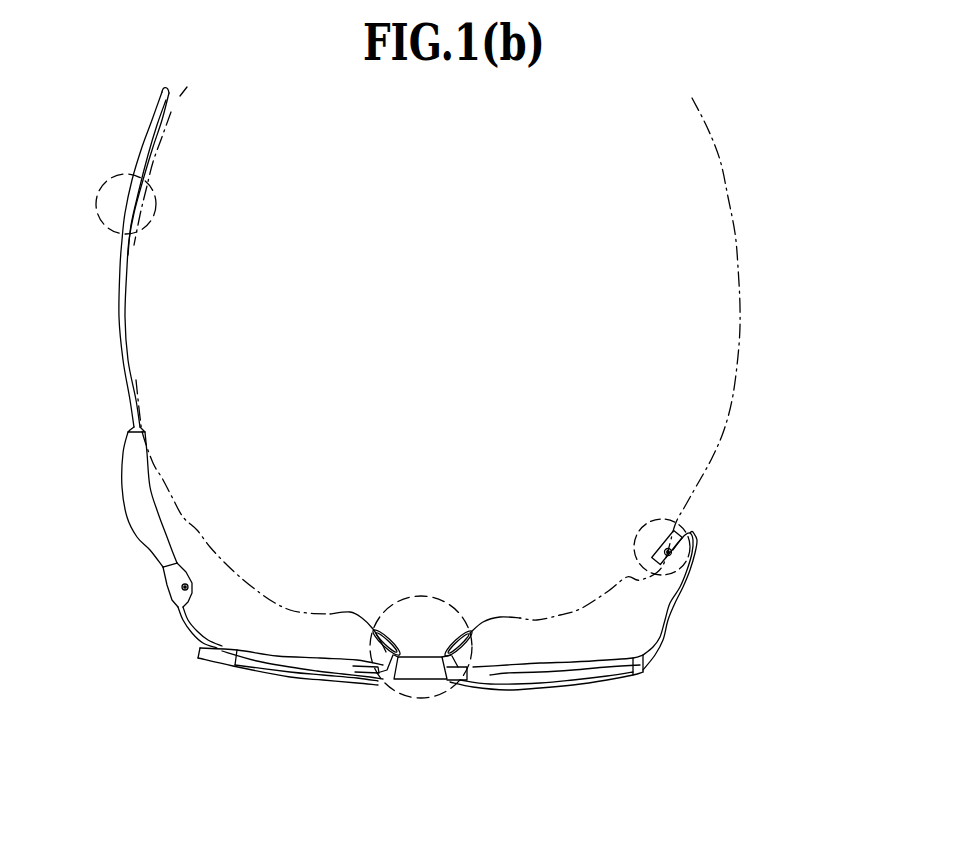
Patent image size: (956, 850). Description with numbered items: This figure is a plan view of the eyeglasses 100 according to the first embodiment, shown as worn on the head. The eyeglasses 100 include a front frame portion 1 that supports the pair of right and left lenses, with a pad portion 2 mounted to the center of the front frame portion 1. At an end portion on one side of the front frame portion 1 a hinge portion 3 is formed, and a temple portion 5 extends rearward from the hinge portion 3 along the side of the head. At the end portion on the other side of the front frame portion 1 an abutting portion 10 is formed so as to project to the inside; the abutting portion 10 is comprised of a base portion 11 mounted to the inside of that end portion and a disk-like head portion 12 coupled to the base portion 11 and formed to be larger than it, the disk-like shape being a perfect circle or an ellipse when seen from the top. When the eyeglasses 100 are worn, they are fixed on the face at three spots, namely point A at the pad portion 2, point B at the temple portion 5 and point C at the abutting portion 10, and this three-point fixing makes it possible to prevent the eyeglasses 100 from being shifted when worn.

The eyeglasses 100 is at (485, 333).
The temple portion 5 is at (128, 385).
The hinge portion 3 is at (178, 587).
The pad portion 2 is at (388, 640).
The front frame portion 1 is at (423, 712).
The abutting portion 10 is at (753, 473).
The base portion 11 is at (683, 538).
The disk-like head portion 12 is at (672, 517).
The point A is at (435, 634).
The point B is at (142, 190).
The point C is at (640, 537).